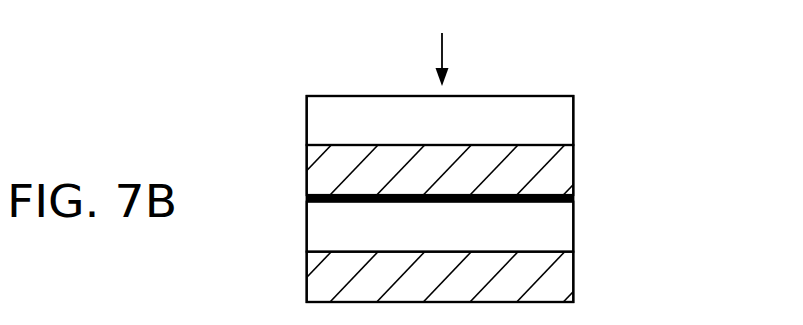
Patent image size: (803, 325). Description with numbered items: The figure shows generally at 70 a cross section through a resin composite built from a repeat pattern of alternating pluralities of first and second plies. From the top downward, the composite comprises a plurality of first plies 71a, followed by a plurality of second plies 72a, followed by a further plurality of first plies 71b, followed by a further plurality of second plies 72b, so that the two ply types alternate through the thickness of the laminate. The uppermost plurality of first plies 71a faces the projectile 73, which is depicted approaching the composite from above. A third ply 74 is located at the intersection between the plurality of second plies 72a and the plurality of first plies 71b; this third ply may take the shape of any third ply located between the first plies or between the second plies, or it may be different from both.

The resin composite cross section 70 is at (695, 82).
The plurality of first plies 71a is at (573, 120).
The plurality of first plies 71b is at (573, 227).
The plurality of second plies 72a is at (573, 171).
The plurality of second plies 72b is at (573, 277).
The projectile 73 is at (442, 48).
The third ply 74 is at (573, 198).